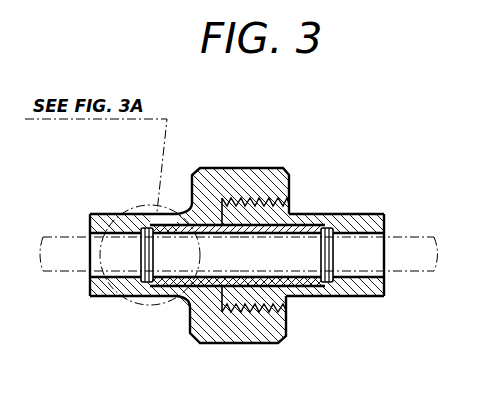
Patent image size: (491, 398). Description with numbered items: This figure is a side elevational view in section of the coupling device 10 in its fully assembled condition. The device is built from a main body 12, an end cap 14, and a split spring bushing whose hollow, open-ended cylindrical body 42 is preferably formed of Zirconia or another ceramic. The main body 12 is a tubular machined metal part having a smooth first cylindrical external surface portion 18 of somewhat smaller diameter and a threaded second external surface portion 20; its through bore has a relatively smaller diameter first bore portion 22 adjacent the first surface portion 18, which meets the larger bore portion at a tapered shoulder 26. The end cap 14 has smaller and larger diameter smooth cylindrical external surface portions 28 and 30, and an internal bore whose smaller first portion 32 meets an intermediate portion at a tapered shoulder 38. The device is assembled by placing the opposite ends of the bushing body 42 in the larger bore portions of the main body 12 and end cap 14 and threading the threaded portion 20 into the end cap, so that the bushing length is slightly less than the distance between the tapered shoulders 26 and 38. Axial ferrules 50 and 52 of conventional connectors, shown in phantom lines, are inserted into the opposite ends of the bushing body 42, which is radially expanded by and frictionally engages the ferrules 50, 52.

The coupling device 10 is at (168, 318).
The main body 12 is at (320, 182).
The end cap 14 is at (191, 166).
The first cylindrical external surface portion 18 is at (355, 226).
The second cylindrical external surface portion 20 is at (257, 205).
The first bore portion 22 is at (367, 257).
The tapered shoulder 26 is at (334, 258).
The first external surface portion of end cap 28 is at (100, 224).
The second external surface portion of end cap 30 is at (216, 177).
The first bore portion of end cap 32 is at (122, 253).
The tapered shoulder 38 is at (153, 253).
The cylindrical body 42 is at (302, 268).
The axial ferrule 50 is at (423, 266).
The axial ferrule 52 is at (62, 237).